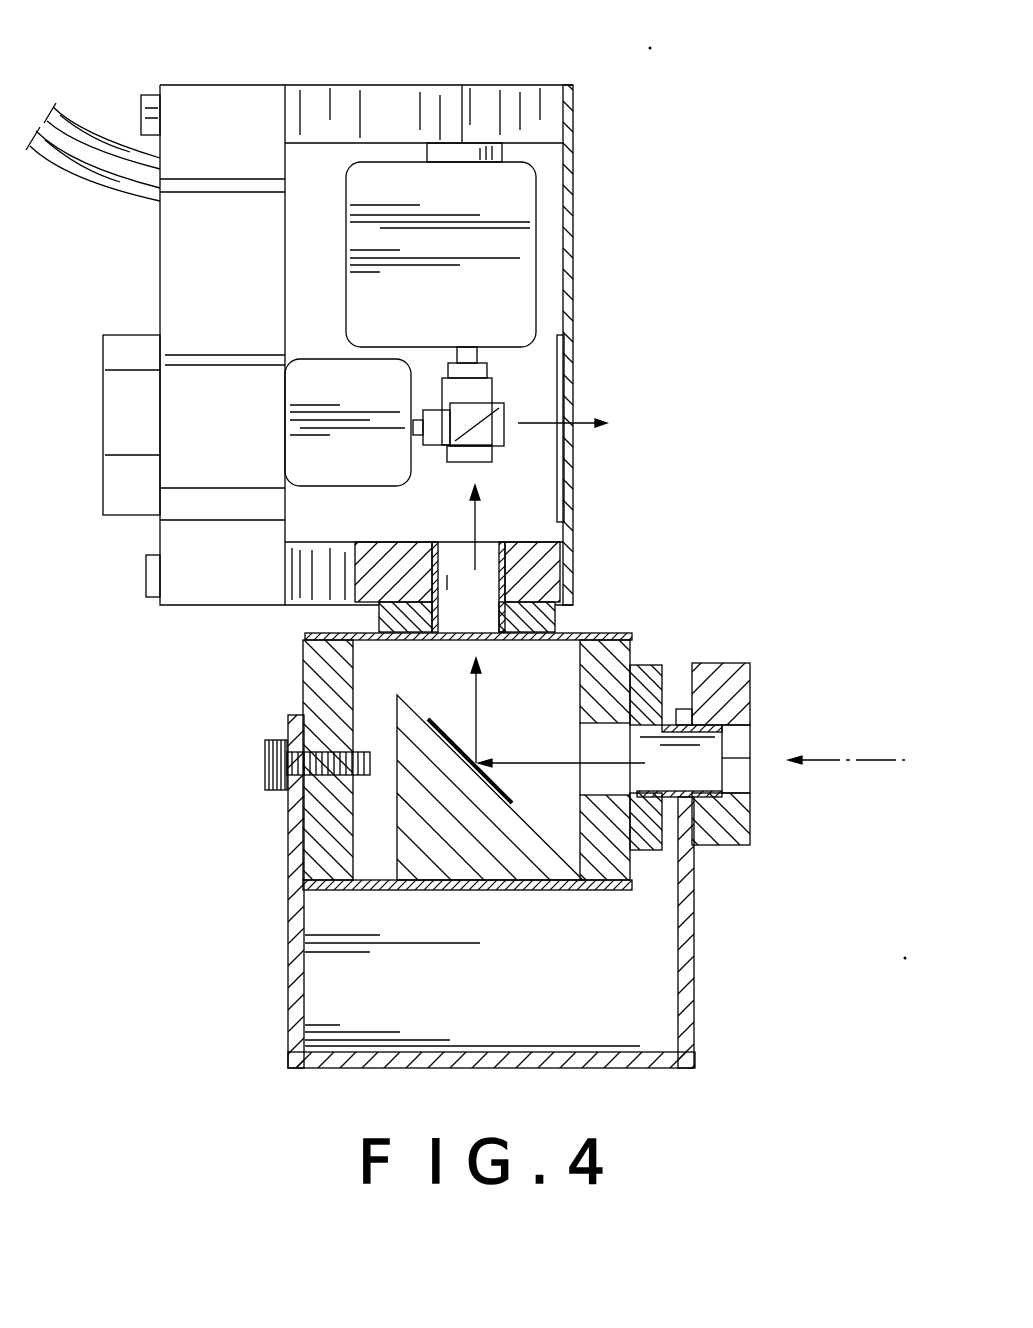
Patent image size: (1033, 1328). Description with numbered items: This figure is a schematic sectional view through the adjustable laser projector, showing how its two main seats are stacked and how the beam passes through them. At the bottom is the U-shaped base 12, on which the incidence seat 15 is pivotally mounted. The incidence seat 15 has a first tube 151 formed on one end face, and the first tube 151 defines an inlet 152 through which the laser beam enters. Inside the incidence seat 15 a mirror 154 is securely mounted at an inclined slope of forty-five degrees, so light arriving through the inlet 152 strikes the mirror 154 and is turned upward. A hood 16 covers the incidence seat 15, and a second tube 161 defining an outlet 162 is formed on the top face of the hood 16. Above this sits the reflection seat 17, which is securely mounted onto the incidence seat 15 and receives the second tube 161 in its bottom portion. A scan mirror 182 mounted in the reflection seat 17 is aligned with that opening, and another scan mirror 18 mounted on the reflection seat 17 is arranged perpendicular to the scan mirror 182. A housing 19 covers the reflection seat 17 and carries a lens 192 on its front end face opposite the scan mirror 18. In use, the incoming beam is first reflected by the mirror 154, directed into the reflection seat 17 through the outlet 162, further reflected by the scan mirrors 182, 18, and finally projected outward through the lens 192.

The base 12 is at (292, 968).
The incidence seat 15 is at (313, 850).
The hood 16 is at (303, 637).
The reflection seat 17 is at (405, 104).
The scan mirror 18 is at (529, 418).
The housing 19 is at (565, 238).
The first tube 151 is at (723, 733).
The inlet 152 is at (699, 793).
The mirror 154 is at (503, 797).
The second tube 161 is at (507, 562).
The outlet 162 is at (506, 630).
The scan mirror 182 is at (500, 440).
The lens 192 is at (558, 400).